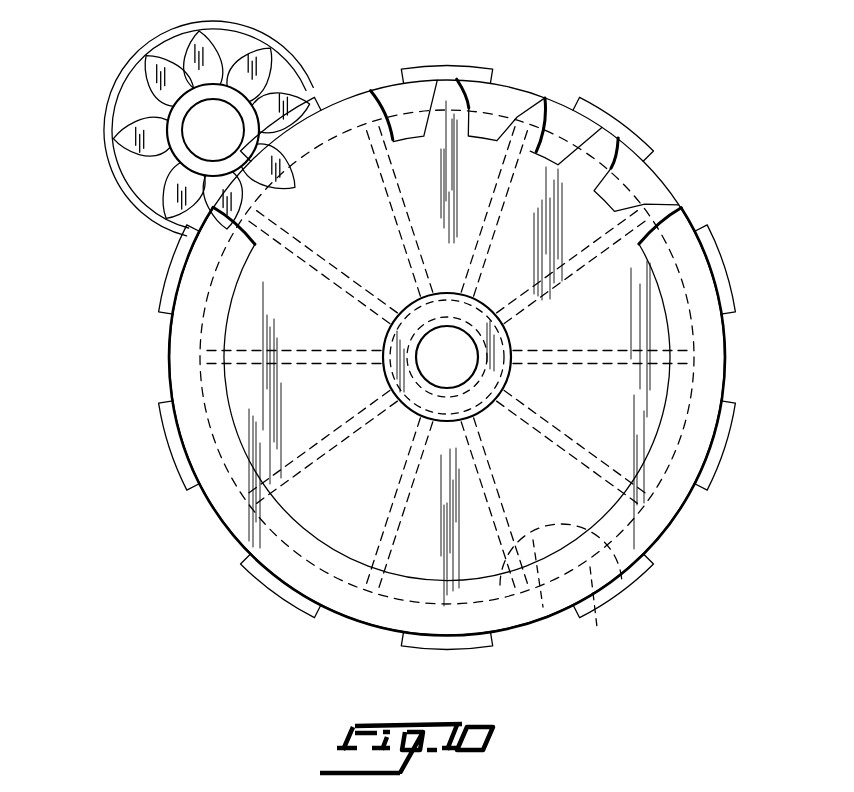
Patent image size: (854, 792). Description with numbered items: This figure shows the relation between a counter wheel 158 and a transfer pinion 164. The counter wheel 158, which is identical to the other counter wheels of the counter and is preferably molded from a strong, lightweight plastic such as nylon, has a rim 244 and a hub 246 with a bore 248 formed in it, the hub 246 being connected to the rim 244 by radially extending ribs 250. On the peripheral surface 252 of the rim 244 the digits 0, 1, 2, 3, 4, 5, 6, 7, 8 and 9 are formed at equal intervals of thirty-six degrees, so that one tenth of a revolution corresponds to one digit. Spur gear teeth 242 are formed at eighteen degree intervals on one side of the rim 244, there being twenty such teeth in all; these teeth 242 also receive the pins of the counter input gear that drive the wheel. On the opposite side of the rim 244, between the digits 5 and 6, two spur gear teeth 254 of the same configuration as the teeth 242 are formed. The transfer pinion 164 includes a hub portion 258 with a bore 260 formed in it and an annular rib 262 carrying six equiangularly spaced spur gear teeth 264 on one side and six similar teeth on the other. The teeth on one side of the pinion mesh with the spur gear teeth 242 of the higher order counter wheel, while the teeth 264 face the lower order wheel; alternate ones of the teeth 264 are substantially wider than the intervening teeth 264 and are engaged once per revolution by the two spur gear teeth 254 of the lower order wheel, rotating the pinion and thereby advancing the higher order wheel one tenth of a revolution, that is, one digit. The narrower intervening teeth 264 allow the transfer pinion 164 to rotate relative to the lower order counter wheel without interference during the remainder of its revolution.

The units counter wheel 158 is at (152, 356).
The transfer pinion 164 is at (183, 118).
The spur gear teeth 242 is at (528, 103).
The rim 244 is at (695, 518).
The hub 246 is at (508, 375).
The bore 248 is at (438, 337).
The radially extending ribs 250 is at (395, 500).
The peripheral surface 252 is at (507, 634).
The spur gear teeth 254 is at (562, 625).
The hub portion 258 is at (113, 117).
The bore 260 is at (209, 105).
The annular rib 262 is at (125, 146).
The spur gear teeth 264 is at (124, 170).
The digit 0 is at (453, 70).
The digit 1 is at (313, 104).
The digit 2 is at (170, 256).
The digit 3 is at (168, 447).
The digit 4 is at (270, 592).
The digit 5 is at (440, 650).
The digit 6 is at (613, 584).
The digit 7 is at (720, 448).
The digit 8 is at (720, 268).
The digit 9 is at (625, 128).